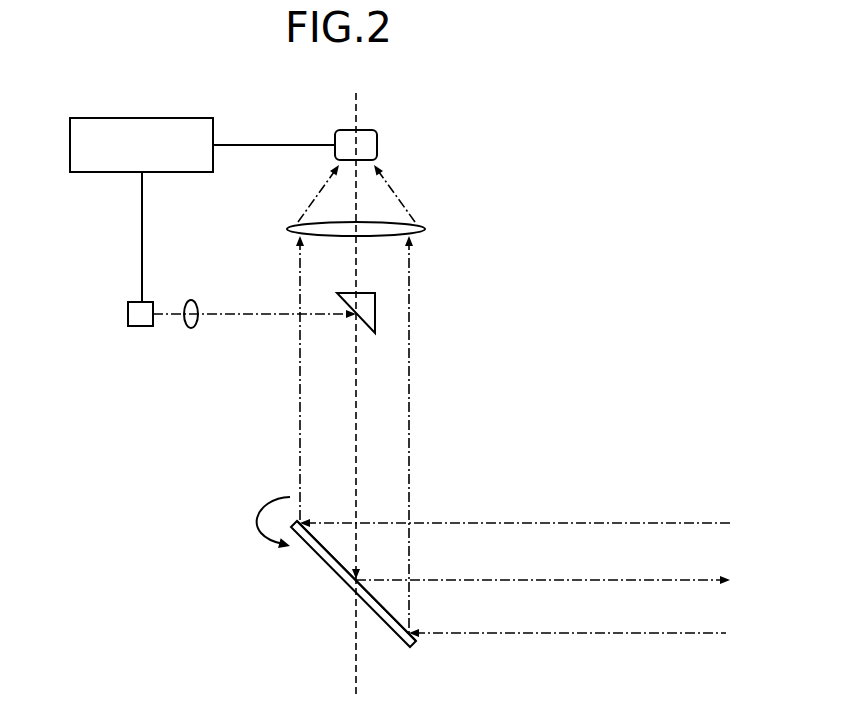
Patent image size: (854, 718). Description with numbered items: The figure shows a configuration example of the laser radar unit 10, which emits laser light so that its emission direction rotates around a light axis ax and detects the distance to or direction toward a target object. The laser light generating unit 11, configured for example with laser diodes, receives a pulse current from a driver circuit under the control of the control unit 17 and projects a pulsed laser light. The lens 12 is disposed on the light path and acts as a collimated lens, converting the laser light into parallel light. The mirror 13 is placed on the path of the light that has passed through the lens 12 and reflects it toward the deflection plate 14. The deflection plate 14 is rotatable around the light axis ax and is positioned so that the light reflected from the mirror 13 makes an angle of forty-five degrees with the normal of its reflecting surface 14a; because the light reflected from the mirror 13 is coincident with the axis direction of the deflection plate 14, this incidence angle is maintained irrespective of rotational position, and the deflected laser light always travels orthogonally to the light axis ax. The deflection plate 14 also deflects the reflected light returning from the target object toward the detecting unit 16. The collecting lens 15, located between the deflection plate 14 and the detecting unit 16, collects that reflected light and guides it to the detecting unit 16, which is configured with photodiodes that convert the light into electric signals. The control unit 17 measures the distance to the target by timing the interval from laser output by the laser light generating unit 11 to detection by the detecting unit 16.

The laser radar unit 10 is at (576, 178).
The laser light generating unit 11 is at (143, 326).
The lens 12 is at (190, 300).
The mirror 13 is at (363, 293).
The deflection plate 14 is at (325, 561).
The reflecting surface 14a is at (324, 547).
The collecting lens 15 is at (425, 226).
The detecting unit 16 is at (378, 139).
The control unit 17 is at (177, 118).
The light axis ax is at (358, 677).